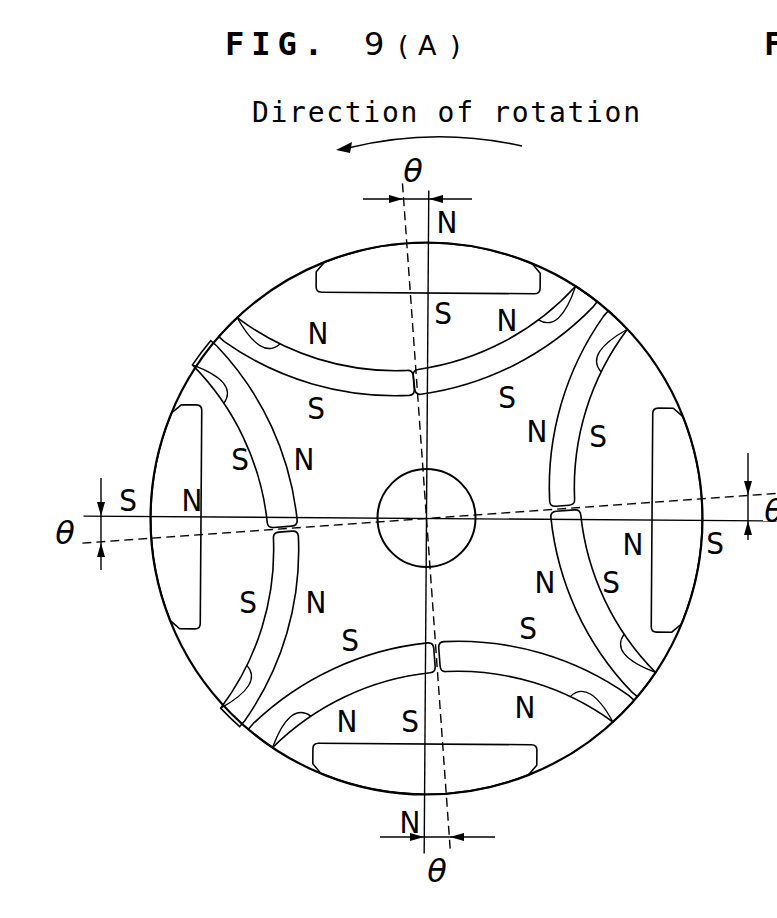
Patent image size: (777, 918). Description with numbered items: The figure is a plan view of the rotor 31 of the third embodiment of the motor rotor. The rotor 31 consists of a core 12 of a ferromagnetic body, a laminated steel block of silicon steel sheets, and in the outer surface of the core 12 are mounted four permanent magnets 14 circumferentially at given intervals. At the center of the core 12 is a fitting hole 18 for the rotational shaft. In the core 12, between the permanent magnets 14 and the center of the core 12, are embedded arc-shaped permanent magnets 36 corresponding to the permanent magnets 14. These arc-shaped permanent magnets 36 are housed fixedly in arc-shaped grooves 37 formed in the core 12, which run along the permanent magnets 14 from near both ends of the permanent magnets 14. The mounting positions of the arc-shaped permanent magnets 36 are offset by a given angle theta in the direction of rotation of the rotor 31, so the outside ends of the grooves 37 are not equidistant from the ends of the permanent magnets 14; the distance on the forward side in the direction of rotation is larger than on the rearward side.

The core 12 is at (666, 372).
The permanent magnet 14 is at (357, 260).
The fitting hole 18 is at (405, 500).
The rotor 31 is at (627, 291).
The arc-shaped permanent magnet 36 is at (380, 378).
The arc-shaped groove 37 is at (241, 338).